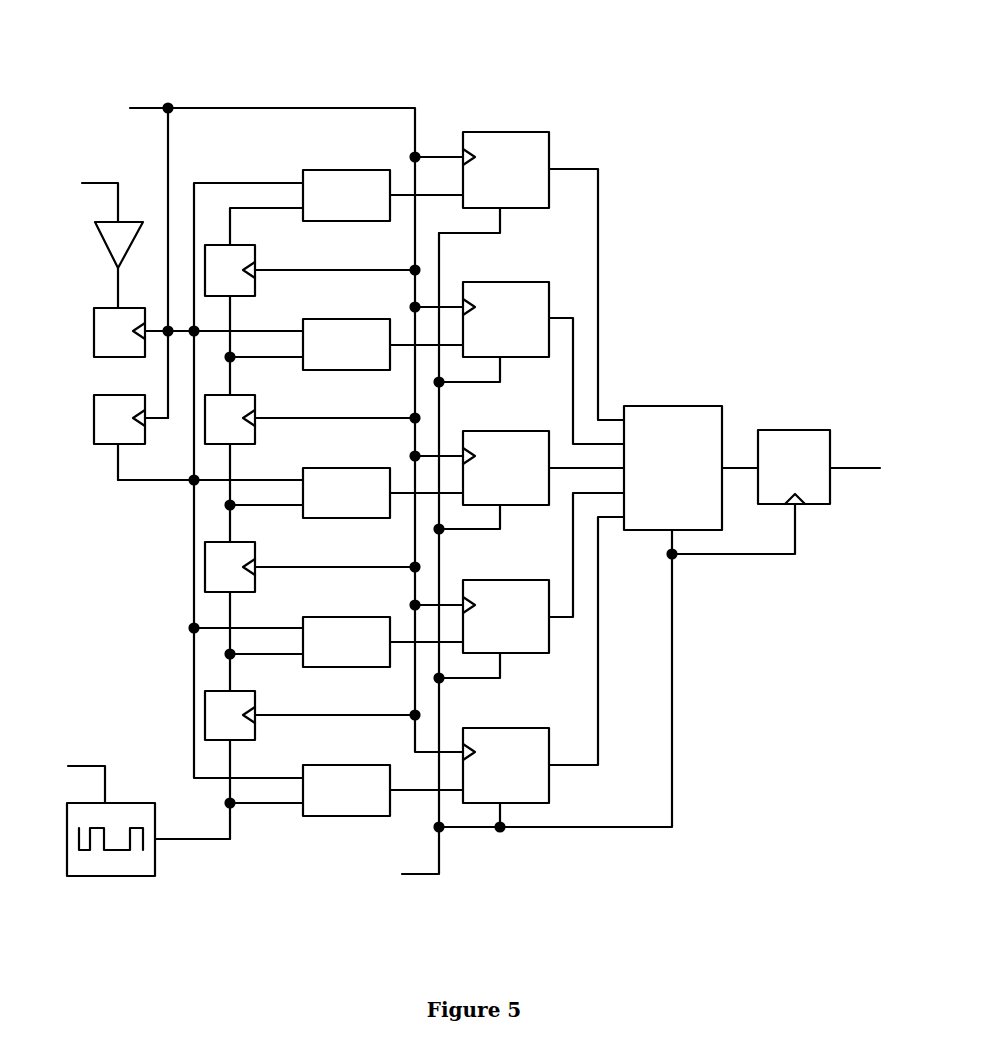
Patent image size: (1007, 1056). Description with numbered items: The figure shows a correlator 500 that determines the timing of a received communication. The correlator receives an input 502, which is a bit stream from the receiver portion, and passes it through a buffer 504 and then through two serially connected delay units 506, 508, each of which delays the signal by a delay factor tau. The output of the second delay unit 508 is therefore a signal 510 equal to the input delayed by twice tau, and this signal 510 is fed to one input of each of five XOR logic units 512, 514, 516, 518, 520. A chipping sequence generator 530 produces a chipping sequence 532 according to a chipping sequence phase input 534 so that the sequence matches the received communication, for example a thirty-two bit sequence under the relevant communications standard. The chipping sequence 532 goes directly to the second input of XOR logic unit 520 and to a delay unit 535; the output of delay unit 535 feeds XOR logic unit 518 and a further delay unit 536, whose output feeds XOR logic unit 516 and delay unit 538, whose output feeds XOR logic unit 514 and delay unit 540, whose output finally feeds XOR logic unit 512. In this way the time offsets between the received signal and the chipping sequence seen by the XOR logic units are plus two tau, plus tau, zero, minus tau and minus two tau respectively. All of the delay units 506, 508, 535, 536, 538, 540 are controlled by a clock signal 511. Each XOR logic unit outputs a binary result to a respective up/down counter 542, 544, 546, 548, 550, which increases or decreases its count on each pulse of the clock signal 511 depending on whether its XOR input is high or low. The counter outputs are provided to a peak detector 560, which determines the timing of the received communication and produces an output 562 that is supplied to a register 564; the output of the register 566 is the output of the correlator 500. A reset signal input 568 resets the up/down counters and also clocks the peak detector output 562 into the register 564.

The correlator 500 is at (685, 979).
The input 502 is at (83, 183).
The buffer 504 is at (114, 240).
The delay unit 506 is at (94, 328).
The delay unit 508 is at (101, 437).
The signal 510 is at (136, 483).
The clock signal 511 is at (140, 110).
The XOR logic unit 512 is at (330, 169).
The XOR logic unit 514 is at (322, 318).
The XOR logic unit 516 is at (320, 468).
The XOR logic unit 518 is at (318, 617).
The XOR logic unit 520 is at (322, 767).
The chipping sequence generator 530 is at (105, 878).
The chipping sequence 532 is at (203, 840).
The chipping sequence phase input 534 is at (78, 766).
The delay unit 535 is at (248, 697).
The delay unit 536 is at (248, 549).
The delay unit 538 is at (248, 399).
The delay unit 540 is at (248, 249).
The up/down counter 542 is at (545, 142).
The up/down counter 544 is at (531, 291).
The up/down counter 546 is at (510, 440).
The up/down counter 548 is at (513, 585).
The up/down counter 550 is at (517, 732).
The peak detector 560 is at (656, 410).
The output of the peak detector 562 is at (741, 462).
The register 564 is at (808, 437).
The output of the register 566 is at (858, 470).
The reset signal input 568 is at (410, 876).